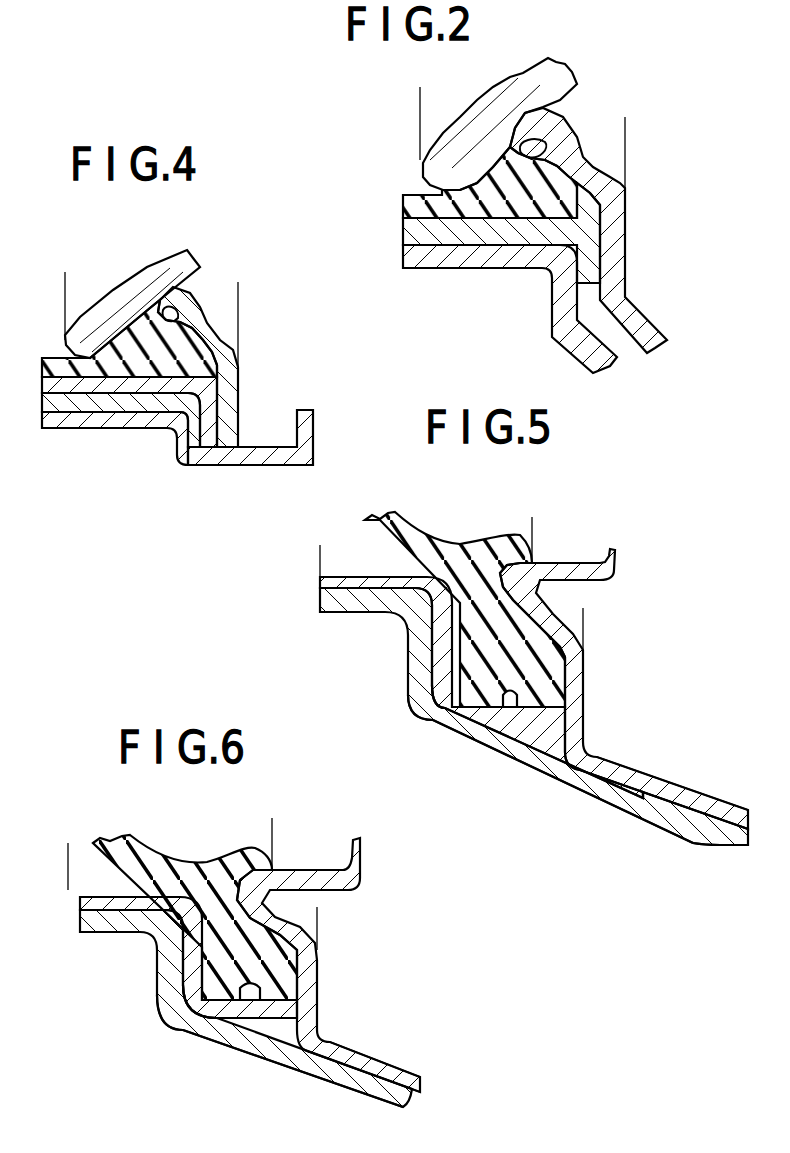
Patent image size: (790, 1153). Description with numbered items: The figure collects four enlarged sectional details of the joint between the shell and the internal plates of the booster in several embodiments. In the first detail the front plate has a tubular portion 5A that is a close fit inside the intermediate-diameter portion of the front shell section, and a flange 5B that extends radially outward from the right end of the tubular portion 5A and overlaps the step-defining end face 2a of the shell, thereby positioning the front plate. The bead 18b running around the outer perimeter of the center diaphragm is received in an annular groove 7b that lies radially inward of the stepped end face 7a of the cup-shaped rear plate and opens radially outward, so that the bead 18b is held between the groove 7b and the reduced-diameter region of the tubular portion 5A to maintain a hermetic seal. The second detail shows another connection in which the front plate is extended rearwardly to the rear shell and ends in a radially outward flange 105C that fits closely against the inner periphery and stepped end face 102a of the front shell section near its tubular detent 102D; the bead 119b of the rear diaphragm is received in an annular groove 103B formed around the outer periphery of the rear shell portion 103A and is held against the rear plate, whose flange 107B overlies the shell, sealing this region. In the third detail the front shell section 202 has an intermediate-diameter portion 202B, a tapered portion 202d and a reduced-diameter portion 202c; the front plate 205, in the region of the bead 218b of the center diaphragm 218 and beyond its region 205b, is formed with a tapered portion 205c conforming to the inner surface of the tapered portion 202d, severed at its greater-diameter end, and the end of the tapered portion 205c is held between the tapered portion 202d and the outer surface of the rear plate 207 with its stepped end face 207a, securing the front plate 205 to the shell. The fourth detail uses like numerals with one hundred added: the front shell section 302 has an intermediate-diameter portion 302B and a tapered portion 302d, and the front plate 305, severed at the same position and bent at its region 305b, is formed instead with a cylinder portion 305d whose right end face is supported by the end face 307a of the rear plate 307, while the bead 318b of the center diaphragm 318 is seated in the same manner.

In FIG. 2, the bead 18b is at (508, 182).
In FIG. 2, the annular groove 7b is at (548, 155).
In FIG. 2, the tubular portion 5A is at (433, 212).
In FIG. 2, the flange 5B is at (627, 222).
In FIG. 2, the stepped end face 7a is at (623, 270).
In FIG. 2, the end face 2a is at (552, 313).
In FIG. 4, the bead 119b is at (138, 337).
In FIG. 4, the annular groove 103B is at (172, 318).
In FIG. 4, the flange of panel 103A is at (230, 420).
In FIG. 4, the end face 102a is at (172, 450).
In FIG. 4, the flange 105C is at (194, 450).
In FIG. 4, the flange 107B is at (210, 440).
In FIG. 4, the tubular detent 102D is at (277, 458).
In FIG. 5, the center diaphragm 218 is at (471, 538).
In FIG. 5, the front plate 205 is at (348, 578).
In FIG. 5, the portion having an intermediate diameter 202B is at (349, 612).
In FIG. 5, the rear plate 207 is at (586, 648).
In FIG. 5, the stepped end face 207a is at (586, 688).
In FIG. 5, the bent portion of inner plate 205b is at (428, 680).
In FIG. 5, the front shell section 202 is at (437, 735).
In FIG. 5, the bead 218b is at (490, 710).
In FIG. 5, the tapered portion 202d is at (545, 770).
In FIG. 5, the tapered portion 205c is at (620, 792).
In FIG. 5, the portion having a reduced diameter 202c is at (702, 847).
In FIG. 6, the center diaphragm 318 is at (202, 860).
In FIG. 6, the front plate 305 is at (103, 895).
In FIG. 6, the rear plate 307 is at (362, 880).
In FIG. 6, the portion having an intermediate diameter 302B is at (117, 930).
In FIG. 6, the end face 307a is at (320, 970).
In FIG. 6, the bent portion of inner plate 305b is at (193, 980).
In FIG. 6, the front shell section 302 is at (178, 1026).
In FIG. 6, the bead 318b is at (227, 985).
In FIG. 6, the cylinder portion 305d is at (263, 1018).
In FIG. 6, the tapered portion 302d is at (318, 1077).